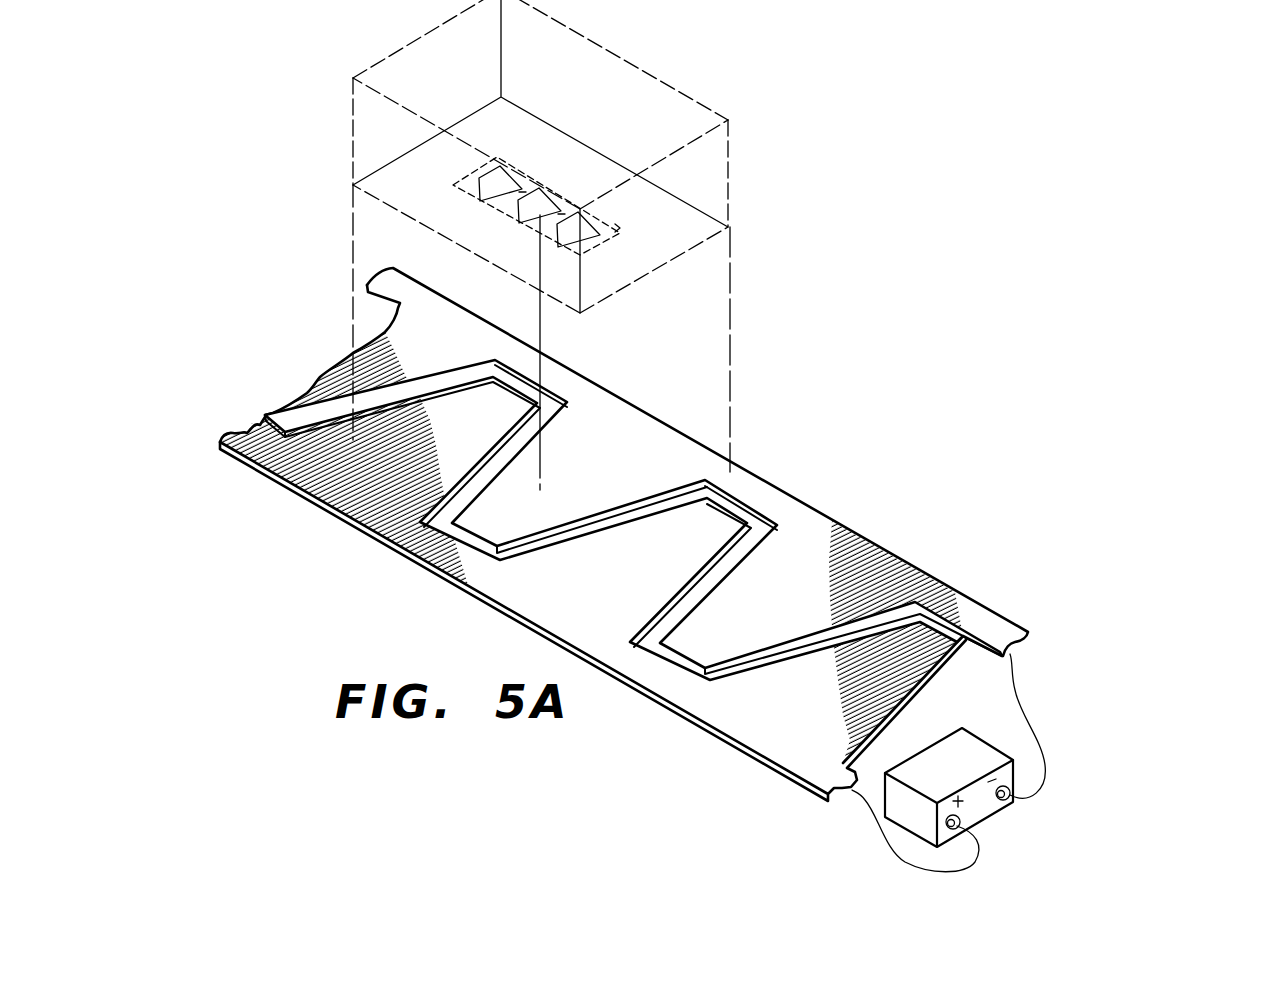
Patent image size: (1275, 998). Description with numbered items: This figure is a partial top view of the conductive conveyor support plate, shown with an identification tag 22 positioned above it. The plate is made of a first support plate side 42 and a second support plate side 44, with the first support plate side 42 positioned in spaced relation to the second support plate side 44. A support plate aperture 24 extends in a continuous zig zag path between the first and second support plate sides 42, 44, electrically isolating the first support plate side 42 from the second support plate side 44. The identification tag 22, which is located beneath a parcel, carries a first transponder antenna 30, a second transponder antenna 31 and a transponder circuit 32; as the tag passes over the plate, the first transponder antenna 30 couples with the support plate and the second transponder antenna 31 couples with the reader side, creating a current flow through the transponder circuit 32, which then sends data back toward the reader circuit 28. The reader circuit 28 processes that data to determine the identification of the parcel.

The identification tag 22 is at (696, 90).
The support plate aperture 24 is at (600, 514).
The reader circuit 28 is at (987, 812).
The first transponder antenna 30 is at (484, 183).
The second transponder antenna 31 is at (590, 219).
The transponder circuit 32 is at (522, 217).
The first support plate side 42 is at (896, 571).
The second support plate side 44 is at (370, 508).